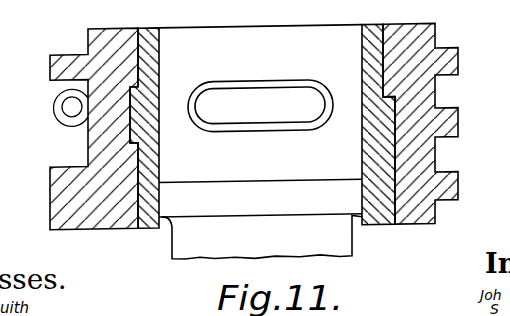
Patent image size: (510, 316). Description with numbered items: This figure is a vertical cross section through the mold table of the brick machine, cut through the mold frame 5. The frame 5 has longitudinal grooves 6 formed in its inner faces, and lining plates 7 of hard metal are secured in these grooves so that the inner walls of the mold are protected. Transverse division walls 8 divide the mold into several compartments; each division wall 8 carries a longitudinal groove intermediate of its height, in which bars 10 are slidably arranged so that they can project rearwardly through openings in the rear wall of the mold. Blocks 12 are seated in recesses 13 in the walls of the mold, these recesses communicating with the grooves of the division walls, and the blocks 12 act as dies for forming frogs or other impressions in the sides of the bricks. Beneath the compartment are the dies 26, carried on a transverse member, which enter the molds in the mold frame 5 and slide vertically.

The frame 5 is at (433, 33).
The longitudinal grooves 6 is at (130, 133).
The lining plates 7 is at (153, 211).
The transverse division walls 8 is at (340, 37).
The bars 10 is at (58, 100).
The blocks 12 is at (220, 105).
The recesses 13 is at (263, 80).
The dies 26 is at (356, 224).